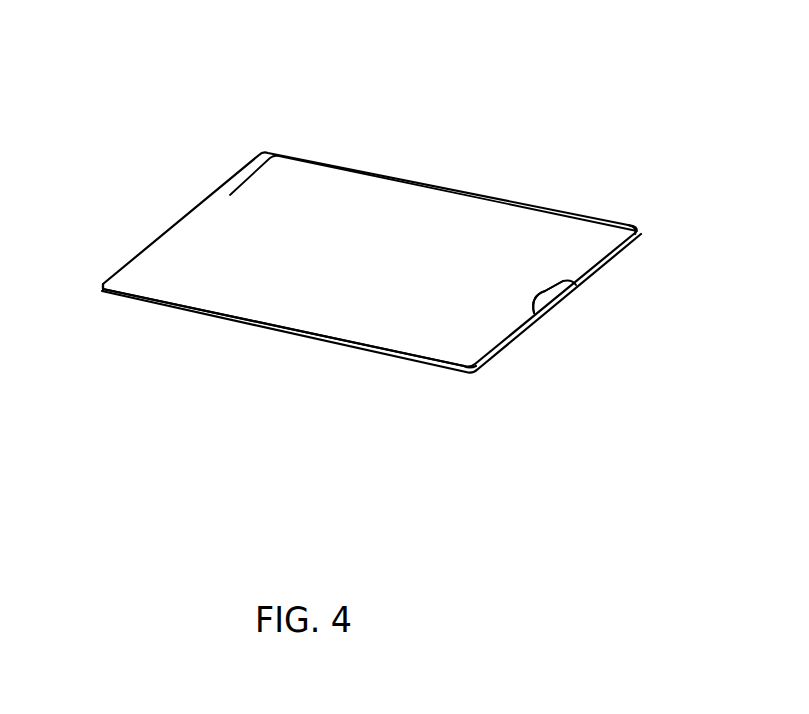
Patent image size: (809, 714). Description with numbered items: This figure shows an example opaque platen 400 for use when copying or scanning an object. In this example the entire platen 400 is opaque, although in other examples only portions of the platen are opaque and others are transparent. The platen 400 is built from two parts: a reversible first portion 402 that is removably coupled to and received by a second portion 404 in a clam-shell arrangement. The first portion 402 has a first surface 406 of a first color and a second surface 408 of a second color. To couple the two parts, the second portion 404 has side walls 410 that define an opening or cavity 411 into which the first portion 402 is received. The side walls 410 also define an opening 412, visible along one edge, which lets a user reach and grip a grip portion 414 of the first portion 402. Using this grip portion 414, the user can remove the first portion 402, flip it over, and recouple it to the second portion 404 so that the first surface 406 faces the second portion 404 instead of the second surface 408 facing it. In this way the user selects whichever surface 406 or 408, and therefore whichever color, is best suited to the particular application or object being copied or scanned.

The platen 400 is at (474, 97).
The first portion 402 is at (609, 263).
The second portion 404 is at (453, 368).
The first surface 406 is at (615, 238).
The second surface 408 is at (547, 303).
The side walls 410 is at (240, 318).
The cavity 411 is at (205, 309).
The opening 412 is at (583, 305).
The grip portion 414 is at (553, 302).